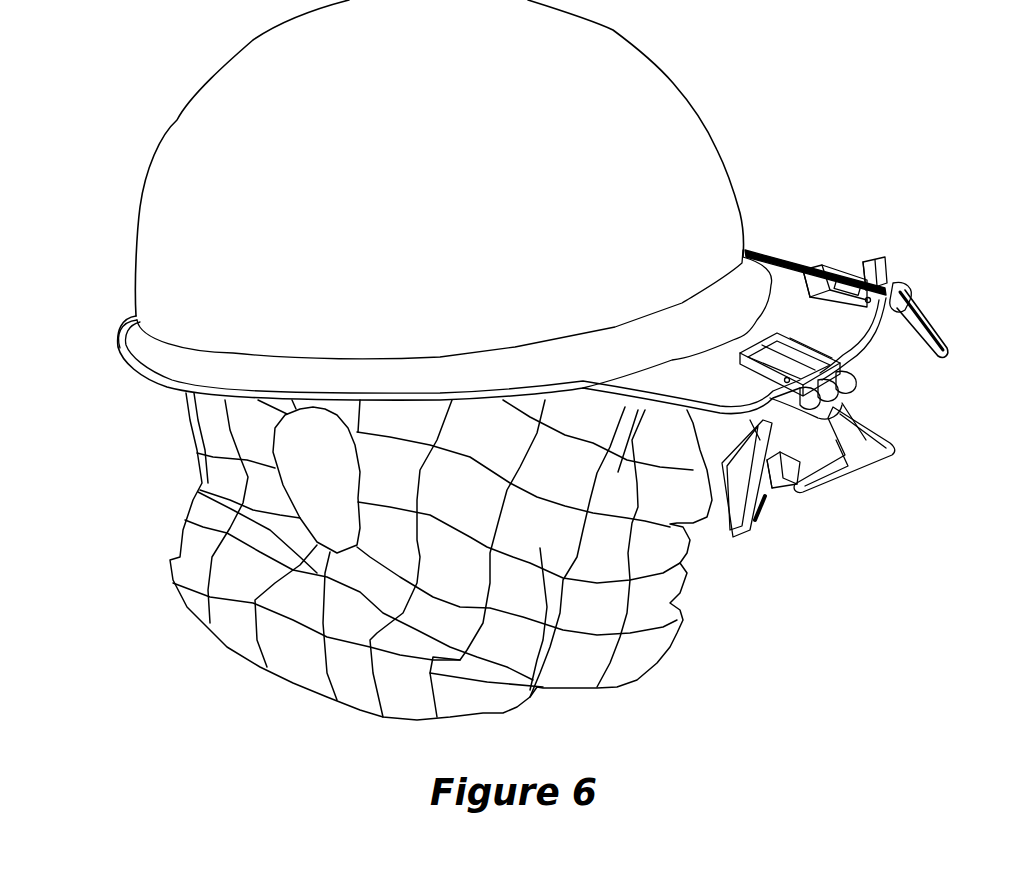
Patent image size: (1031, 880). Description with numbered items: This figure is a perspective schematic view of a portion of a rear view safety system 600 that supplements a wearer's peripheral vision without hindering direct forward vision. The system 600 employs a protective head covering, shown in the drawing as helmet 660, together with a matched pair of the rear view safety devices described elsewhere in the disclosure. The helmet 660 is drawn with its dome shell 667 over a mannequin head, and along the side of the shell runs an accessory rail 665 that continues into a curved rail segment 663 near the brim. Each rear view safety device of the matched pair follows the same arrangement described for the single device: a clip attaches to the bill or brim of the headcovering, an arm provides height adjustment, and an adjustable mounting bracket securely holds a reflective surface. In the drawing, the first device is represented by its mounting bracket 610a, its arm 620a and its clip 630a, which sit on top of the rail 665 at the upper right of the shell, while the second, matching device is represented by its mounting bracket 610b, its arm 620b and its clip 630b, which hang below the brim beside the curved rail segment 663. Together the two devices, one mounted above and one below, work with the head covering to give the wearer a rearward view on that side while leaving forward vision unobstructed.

The rear view safety system 600 is at (881, 36).
The helmet 660 is at (138, 206).
The helmet shell 667 is at (372, 214).
The accessory rail 665 is at (780, 250).
The curved rail segment 663 is at (843, 334).
The first mounting bracket 610a is at (846, 262).
The first arm 620a is at (935, 332).
The first clip 630a is at (890, 245).
The second mounting bracket 610b is at (880, 380).
The second arm 620b is at (827, 485).
The second clip plate 630b is at (750, 532).